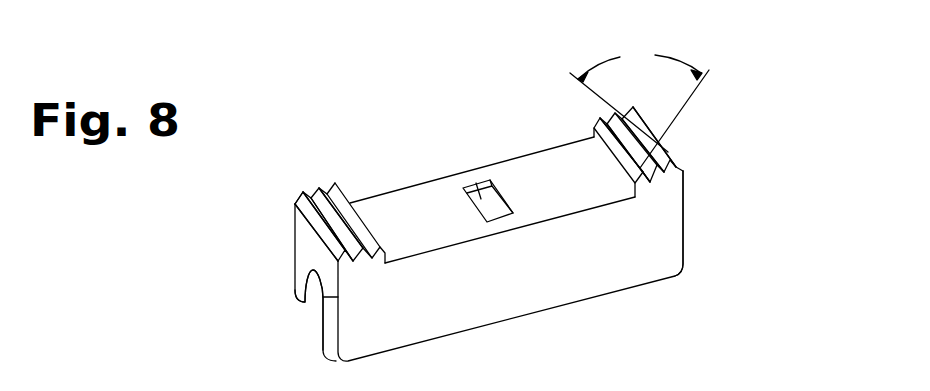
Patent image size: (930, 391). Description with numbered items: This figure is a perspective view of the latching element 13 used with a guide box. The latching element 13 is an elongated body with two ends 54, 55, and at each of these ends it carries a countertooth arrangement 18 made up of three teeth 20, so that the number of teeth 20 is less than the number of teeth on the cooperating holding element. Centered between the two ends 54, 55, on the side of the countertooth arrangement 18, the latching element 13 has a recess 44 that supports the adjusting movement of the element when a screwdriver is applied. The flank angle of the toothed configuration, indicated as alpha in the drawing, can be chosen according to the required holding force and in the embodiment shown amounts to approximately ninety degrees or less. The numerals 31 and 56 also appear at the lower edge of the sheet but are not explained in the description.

The latching element 13 is at (699, 217).
The countertooth arrangement 18 is at (316, 220).
The teeth 20 is at (313, 194).
The recess 44 is at (486, 198).
The end of the latching element 54 is at (686, 250).
The end of the latching element 55 is at (328, 331).
The housing 31 is at (733, 384).
The bottom wall 56 is at (811, 378).